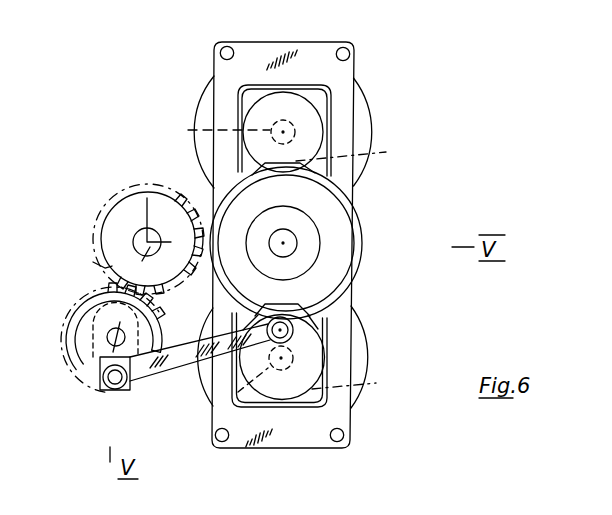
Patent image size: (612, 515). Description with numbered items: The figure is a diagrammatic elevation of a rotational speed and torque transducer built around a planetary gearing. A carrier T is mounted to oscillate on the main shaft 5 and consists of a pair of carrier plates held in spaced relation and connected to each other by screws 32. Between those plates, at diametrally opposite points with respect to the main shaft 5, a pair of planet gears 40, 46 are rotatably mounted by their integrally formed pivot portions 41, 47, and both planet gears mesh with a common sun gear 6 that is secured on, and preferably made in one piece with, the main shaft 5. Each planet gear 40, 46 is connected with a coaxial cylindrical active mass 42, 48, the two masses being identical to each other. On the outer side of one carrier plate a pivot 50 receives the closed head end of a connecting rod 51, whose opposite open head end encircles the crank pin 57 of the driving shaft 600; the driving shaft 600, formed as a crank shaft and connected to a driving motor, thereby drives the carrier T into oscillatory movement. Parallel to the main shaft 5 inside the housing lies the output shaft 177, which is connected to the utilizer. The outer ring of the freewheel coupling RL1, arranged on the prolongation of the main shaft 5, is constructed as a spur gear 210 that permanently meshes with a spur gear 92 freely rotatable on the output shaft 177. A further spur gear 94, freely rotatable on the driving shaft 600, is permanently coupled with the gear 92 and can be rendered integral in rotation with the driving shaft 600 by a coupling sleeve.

The carrier of the planetary gearing T is at (367, 75).
The screws 32 is at (349, 51).
The planet gear 40 is at (366, 154).
The cylindrical active mass 42 is at (371, 121).
The pivot portion 41 is at (273, 132).
The sun gear 6 is at (372, 256).
The freewheel coupling RL1 is at (335, 248).
The main shaft 5 is at (288, 243).
The output shaft 177 is at (147, 198).
The spur gear 210 is at (213, 185).
The spur gear 92 is at (93, 262).
The spur gear 94 is at (103, 292).
The driving shaft 600 is at (108, 336).
The connecting rod 51 is at (153, 366).
The crank pin 57 is at (108, 378).
The pivot 50 is at (293, 331).
The cylindrical active mass 48 is at (363, 348).
The planet gear 46 is at (376, 384).
The pivot portion 47 is at (224, 404).